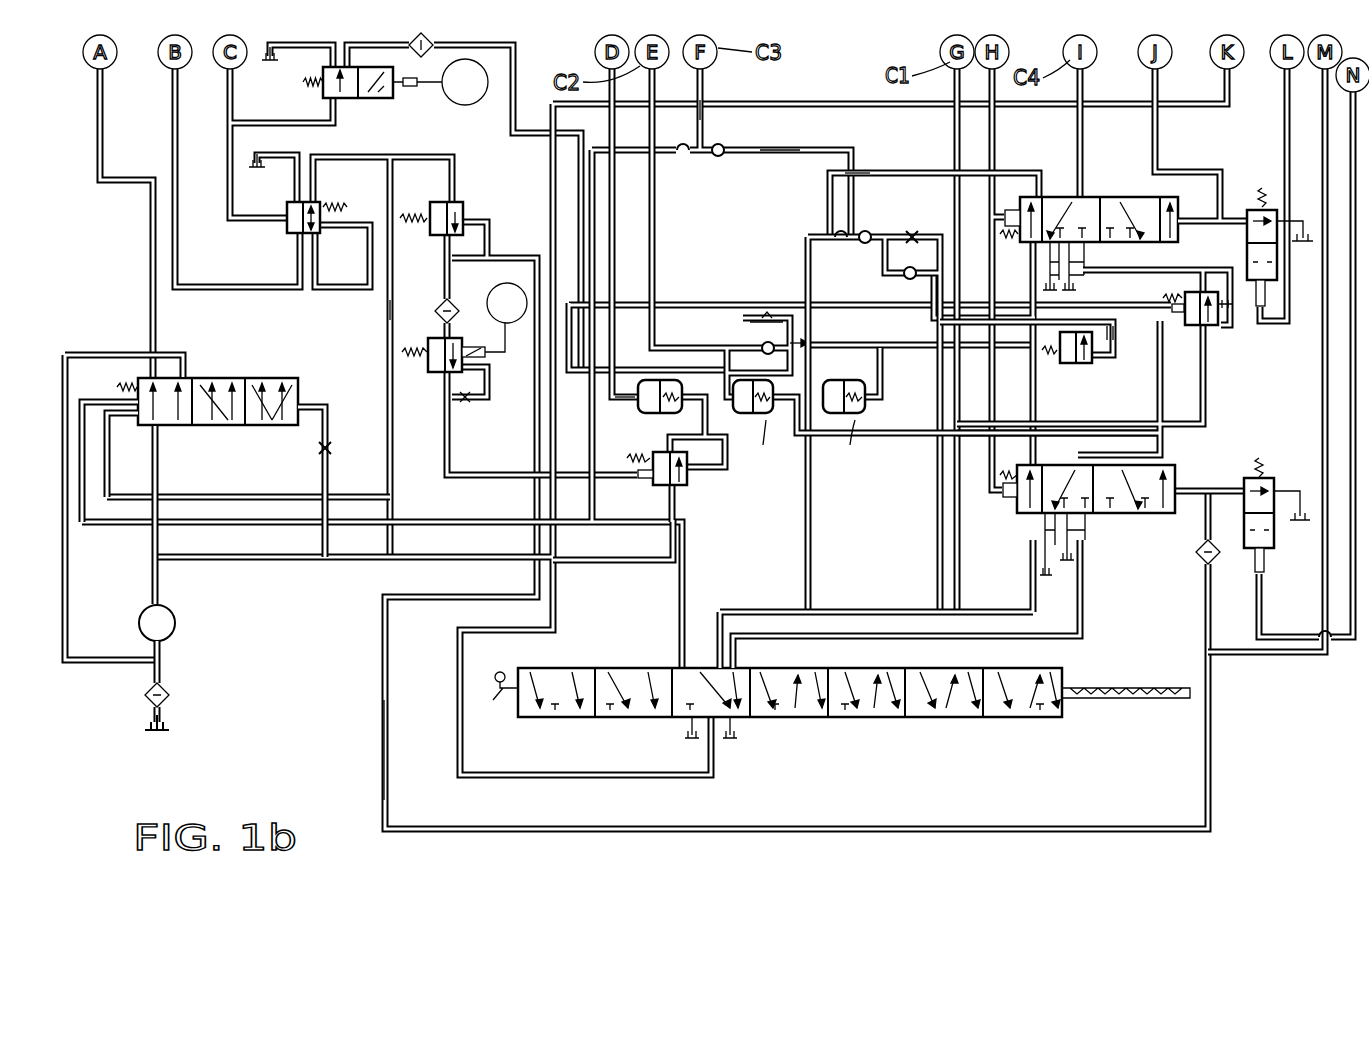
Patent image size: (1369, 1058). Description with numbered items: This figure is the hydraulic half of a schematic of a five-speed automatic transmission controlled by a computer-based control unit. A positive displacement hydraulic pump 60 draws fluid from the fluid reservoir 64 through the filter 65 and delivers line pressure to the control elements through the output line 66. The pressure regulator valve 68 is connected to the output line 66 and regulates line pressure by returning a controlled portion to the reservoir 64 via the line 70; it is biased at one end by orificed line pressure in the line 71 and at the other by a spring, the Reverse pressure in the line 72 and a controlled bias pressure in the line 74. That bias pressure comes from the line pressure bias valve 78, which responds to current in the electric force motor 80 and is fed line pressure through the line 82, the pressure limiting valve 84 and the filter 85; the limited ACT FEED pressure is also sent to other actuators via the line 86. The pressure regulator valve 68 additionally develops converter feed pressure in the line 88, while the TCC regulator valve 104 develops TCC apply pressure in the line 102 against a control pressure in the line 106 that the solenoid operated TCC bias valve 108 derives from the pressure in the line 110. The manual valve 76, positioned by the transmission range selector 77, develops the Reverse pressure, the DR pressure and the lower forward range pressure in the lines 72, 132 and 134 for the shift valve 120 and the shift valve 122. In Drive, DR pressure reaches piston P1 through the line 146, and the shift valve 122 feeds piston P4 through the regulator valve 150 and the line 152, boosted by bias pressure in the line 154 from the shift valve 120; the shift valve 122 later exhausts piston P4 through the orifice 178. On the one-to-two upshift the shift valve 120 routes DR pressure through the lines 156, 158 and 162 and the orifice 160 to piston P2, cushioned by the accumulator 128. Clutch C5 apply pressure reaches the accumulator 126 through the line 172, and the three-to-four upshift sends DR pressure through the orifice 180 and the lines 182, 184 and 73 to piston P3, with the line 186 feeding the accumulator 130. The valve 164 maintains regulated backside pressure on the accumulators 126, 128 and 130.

The positive displacement hydraulic pump 60 is at (175, 623).
The fluid reservoir 64 is at (163, 732).
The filter 65 is at (170, 695).
The output line 66 is at (276, 592).
The pressure regulator valve 68 is at (228, 427).
The line 70 is at (67, 573).
The line 71 is at (312, 397).
The line 72 is at (668, 162).
The line 73 is at (705, 75).
The line 74 is at (258, 494).
The manual valve 76 is at (858, 718).
The transmission range selector 77 is at (488, 697).
The line pressure bias valve 78 is at (428, 368).
The electric force motor 80 is at (487, 357).
The line 82 is at (388, 330).
The pressure limiting valve 84 is at (420, 240).
The filter 85 is at (435, 320).
The line 86 is at (380, 687).
The line 88 is at (150, 259).
The line 102 is at (171, 110).
The TCC regulator valve 104 is at (290, 236).
The line 106 is at (307, 120).
The TCC bias valve 108 is at (347, 103).
The line 110 is at (518, 87).
The shift valve 120 is at (1168, 467).
The shift valve 122 is at (1137, 196).
The accumulator 126 is at (676, 380).
The accumulator 128 is at (775, 410).
The accumulator 130 is at (905, 375).
The DR pressure supply line 132 is at (1205, 368).
The line 134 is at (918, 634).
The line 146 is at (952, 122).
The regulator valve 150 is at (1212, 327).
The line 152 is at (1076, 172).
The line 154 is at (1160, 365).
The line 156 is at (1033, 387).
The line 158 is at (921, 349).
The orifice 160 is at (767, 312).
The line 162 is at (652, 235).
The valve 164 is at (685, 487).
The line 172 is at (612, 168).
The orifice 178 is at (1072, 262).
The orifice 180 is at (1033, 253).
The line 182 is at (880, 177).
The line 184 is at (760, 145).
The line 186 is at (812, 262).